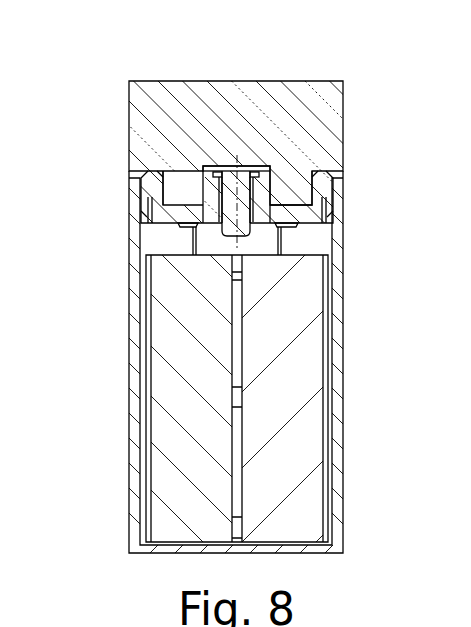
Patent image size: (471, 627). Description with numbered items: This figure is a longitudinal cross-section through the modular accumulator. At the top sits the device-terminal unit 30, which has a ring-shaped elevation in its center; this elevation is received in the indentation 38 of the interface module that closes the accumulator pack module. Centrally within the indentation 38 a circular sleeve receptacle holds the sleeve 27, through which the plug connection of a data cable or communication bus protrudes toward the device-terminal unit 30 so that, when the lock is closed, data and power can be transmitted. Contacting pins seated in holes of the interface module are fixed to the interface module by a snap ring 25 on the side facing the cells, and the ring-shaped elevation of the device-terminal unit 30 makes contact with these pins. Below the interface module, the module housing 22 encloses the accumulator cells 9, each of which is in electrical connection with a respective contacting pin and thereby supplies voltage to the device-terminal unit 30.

The device-terminal unit 30 is at (333, 98).
The indentation 38 is at (292, 203).
The sleeve 27 is at (236, 160).
The snap ring 25 is at (292, 228).
The module housing 22 is at (128, 272).
The accumulator cell 9 is at (305, 367).